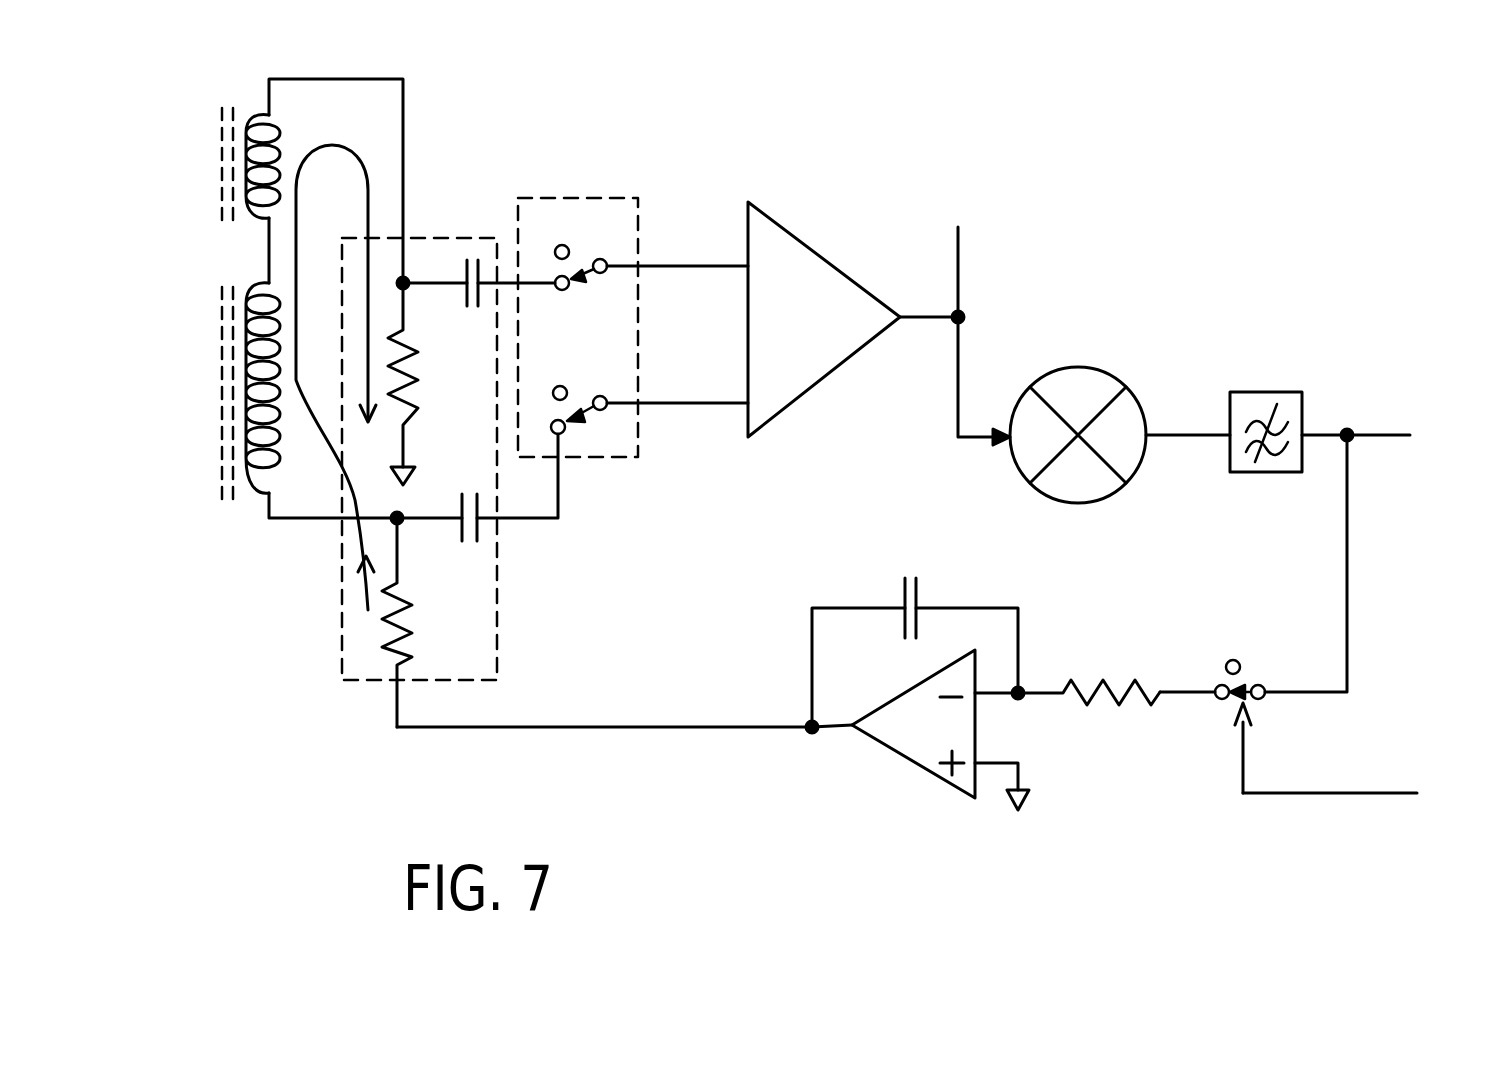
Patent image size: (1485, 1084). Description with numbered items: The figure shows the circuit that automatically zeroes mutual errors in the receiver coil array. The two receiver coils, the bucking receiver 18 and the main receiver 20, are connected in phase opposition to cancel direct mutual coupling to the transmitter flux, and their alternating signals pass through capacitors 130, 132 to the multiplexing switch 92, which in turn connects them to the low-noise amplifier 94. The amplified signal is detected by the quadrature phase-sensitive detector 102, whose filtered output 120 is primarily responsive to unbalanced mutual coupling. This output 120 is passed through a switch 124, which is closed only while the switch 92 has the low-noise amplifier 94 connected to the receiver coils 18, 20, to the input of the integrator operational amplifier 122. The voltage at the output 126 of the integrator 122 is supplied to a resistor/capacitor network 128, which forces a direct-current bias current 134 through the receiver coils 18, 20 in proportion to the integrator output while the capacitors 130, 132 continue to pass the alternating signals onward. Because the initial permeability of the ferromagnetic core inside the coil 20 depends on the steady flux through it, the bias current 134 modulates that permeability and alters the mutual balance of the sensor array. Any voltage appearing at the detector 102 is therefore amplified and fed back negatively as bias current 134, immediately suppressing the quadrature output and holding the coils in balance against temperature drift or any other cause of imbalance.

The bucking receiver 18 is at (262, 115).
The main receiver 20 is at (262, 495).
The multiplexing switch 92 is at (640, 240).
The low-noise amplifier 94 is at (817, 253).
The "Q" phase-sensitive detector 102 is at (1118, 382).
The filtered output 120 is at (1323, 432).
The integrator operational amplifier 122 is at (918, 767).
The switch 124 is at (1227, 707).
The output 126 is at (608, 727).
The resistor/capacitor network 128 is at (353, 682).
The capacitor 130 is at (462, 282).
The capacitor 132 is at (480, 538).
The bias current 134 is at (317, 467).